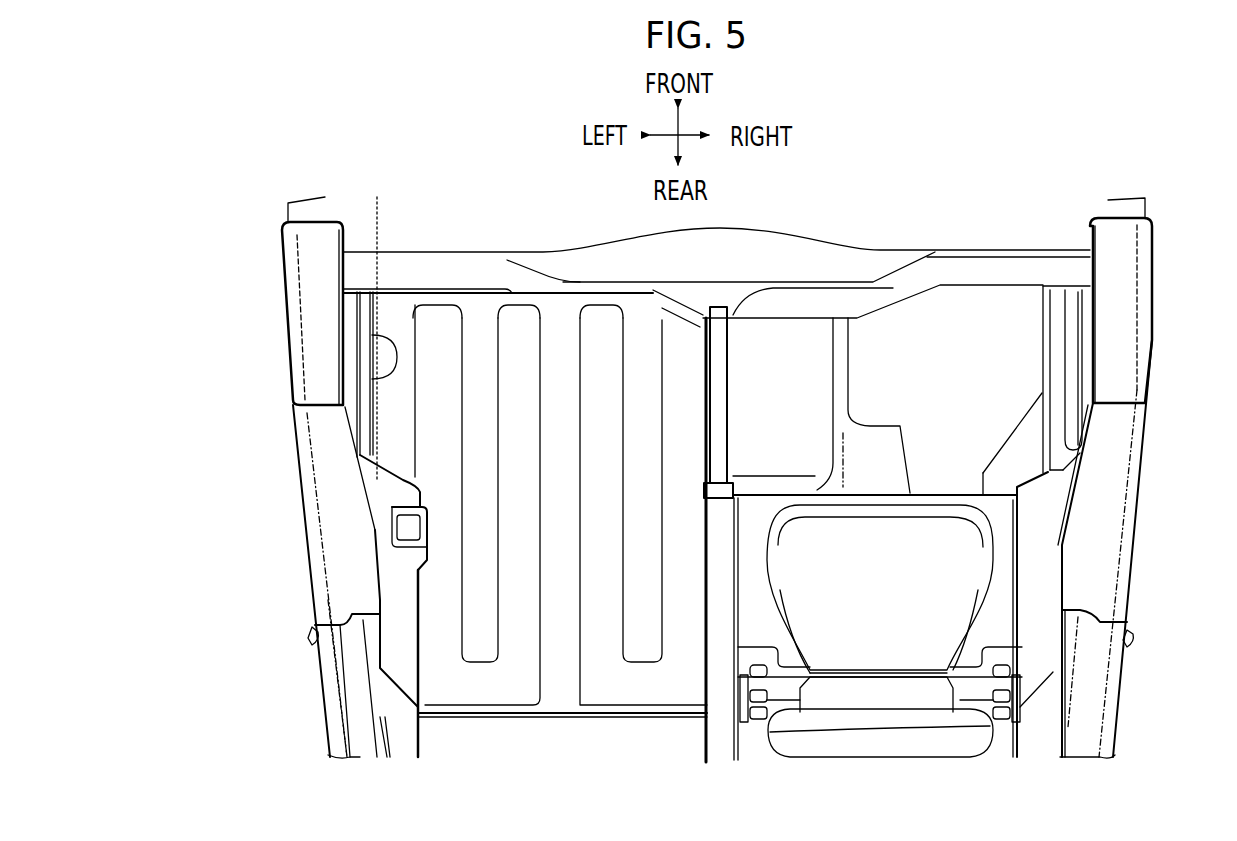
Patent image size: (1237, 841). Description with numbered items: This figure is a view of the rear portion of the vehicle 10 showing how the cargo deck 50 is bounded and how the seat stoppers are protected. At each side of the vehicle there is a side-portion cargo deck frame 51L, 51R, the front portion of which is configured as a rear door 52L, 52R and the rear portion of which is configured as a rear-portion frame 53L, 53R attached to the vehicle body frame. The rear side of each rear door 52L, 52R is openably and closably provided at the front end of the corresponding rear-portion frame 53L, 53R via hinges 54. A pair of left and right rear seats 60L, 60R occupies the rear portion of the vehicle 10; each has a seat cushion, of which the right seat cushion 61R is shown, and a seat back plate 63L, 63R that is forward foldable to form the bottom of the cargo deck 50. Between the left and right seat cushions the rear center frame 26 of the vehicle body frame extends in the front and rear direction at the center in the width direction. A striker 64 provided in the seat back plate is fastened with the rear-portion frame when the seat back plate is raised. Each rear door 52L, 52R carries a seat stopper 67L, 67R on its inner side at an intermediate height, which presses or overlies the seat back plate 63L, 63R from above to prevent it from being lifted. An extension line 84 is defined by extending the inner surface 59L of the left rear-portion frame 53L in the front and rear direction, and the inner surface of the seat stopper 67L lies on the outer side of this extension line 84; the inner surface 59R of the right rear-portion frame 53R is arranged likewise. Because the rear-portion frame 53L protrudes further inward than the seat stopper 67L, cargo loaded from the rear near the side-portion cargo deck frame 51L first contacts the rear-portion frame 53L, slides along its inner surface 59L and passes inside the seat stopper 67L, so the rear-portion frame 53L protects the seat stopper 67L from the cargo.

The vehicle 10 is at (298, 168).
The extension line 84 is at (377, 215).
The cargo deck 50 is at (556, 236).
The rear center frame 26 is at (733, 367).
The seat stopper 67L is at (372, 337).
The seat stopper 67R is at (1072, 343).
The rear door 52L is at (292, 425).
The rear door 52R is at (1130, 432).
The striker 64 is at (392, 527).
The hinges 54 is at (312, 638).
The rear-portion frame 53L is at (333, 693).
The rear-portion frame 53R is at (1118, 695).
The side-portion cargo deck frame 51L is at (347, 760).
The side-portion cargo deck frame 51R is at (1093, 762).
The inner surface 59L is at (378, 697).
The inner surface 59R is at (1060, 695).
The seat back plate 63L is at (491, 687).
The seat back plate 63R is at (882, 745).
The left rear seat 60L is at (576, 725).
The right rear seat 60R is at (817, 760).
The seat cushion 61R is at (943, 570).